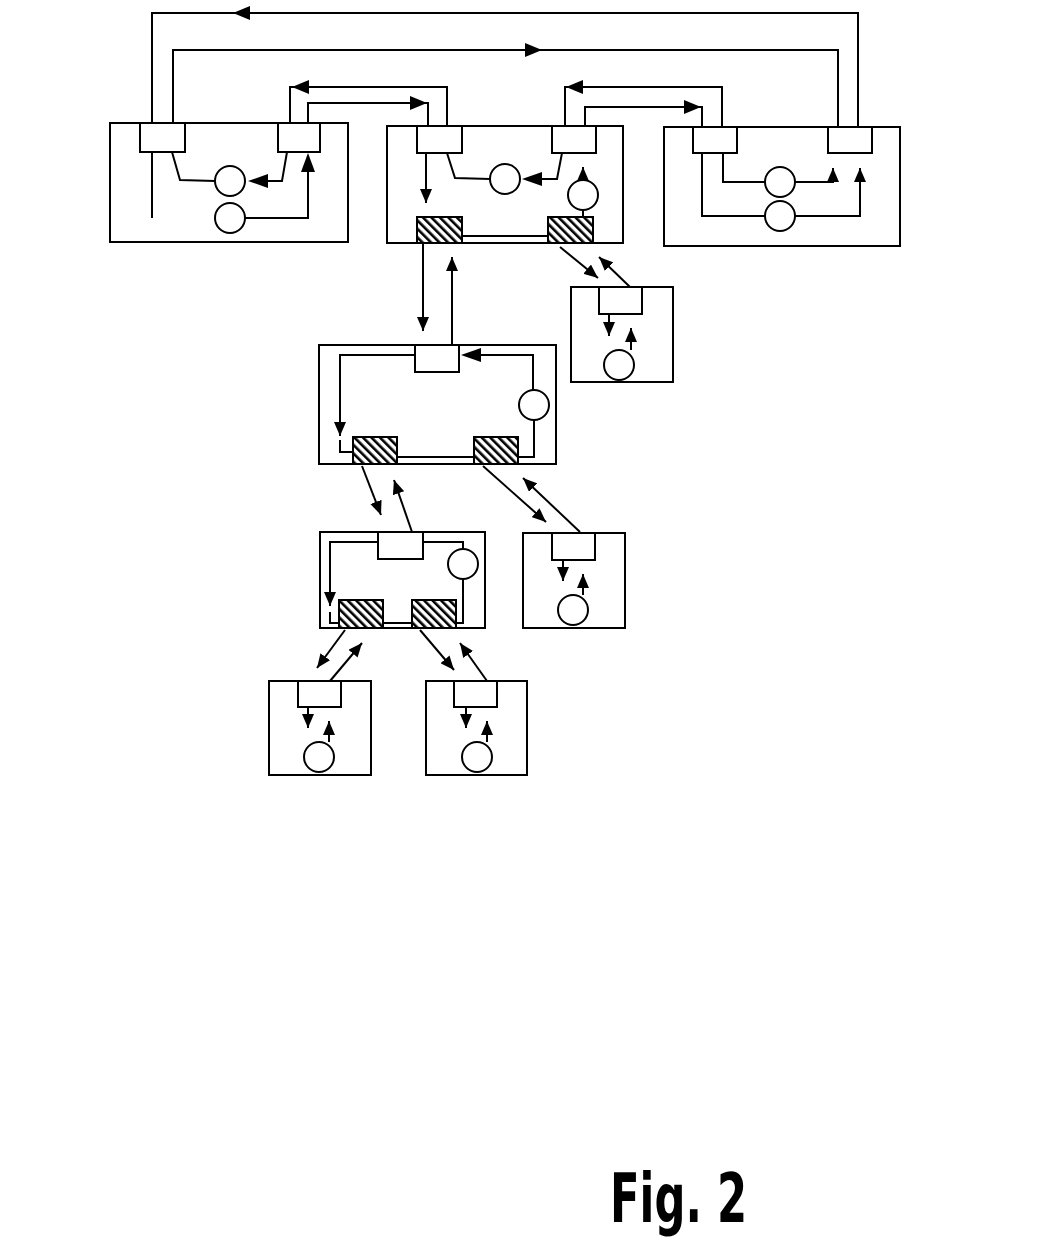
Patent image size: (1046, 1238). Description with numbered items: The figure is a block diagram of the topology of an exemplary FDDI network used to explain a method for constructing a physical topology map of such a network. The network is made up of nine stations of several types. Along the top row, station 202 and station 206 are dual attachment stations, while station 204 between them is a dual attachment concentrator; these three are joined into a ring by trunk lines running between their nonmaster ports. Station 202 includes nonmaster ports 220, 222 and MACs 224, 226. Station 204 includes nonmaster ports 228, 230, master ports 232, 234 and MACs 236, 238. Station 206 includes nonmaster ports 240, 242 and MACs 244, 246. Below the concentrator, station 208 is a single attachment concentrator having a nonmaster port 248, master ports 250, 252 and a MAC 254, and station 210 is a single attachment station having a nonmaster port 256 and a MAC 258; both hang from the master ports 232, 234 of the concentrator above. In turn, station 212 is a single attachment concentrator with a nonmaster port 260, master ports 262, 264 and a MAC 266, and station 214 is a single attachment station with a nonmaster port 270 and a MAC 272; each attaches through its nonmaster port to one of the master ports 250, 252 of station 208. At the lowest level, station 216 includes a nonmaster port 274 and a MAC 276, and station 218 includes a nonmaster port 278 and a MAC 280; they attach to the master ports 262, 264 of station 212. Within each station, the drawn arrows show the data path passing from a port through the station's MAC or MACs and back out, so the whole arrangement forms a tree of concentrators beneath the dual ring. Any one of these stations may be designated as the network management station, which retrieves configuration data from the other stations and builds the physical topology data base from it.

The station 202 is at (110, 140).
The station 204 is at (512, 120).
The station 206 is at (900, 175).
The station 208 is at (319, 430).
The station 210 is at (673, 340).
The station 212 is at (320, 572).
The station 214 is at (625, 580).
The station 216 is at (269, 707).
The station 218 is at (527, 725).
The nonmaster port 220 is at (182, 120).
The nonmaster port 222 is at (283, 120).
The MAC 224 is at (228, 165).
The MAC 226 is at (247, 209).
The nonmaster port 228 is at (462, 146).
The nonmaster port 230 is at (552, 146).
The master port 232 is at (462, 224).
The master port 234 is at (548, 222).
The MAC 236 is at (491, 184).
The MAC 238 is at (608, 190).
The nonmaster port 240 is at (730, 123).
The nonmaster port 242 is at (868, 123).
The MAC 244 is at (796, 158).
The MAC 246 is at (796, 209).
The nonmaster port 248 is at (448, 374).
The master port 250 is at (365, 437).
The master port 252 is at (490, 437).
The MAC 254 is at (519, 410).
The nonmaster port 256 is at (637, 285).
The MAC 258 is at (634, 366).
The nonmaster port 260 is at (405, 559).
The master port 262 is at (358, 600).
The master port 264 is at (422, 600).
The MAC 266 is at (475, 555).
The nonmaster port 270 is at (589, 533).
The MAC 272 is at (586, 617).
The nonmaster port 274 is at (305, 680).
The MAC 276 is at (334, 761).
The nonmaster port 278 is at (492, 681).
The MAC 280 is at (492, 761).